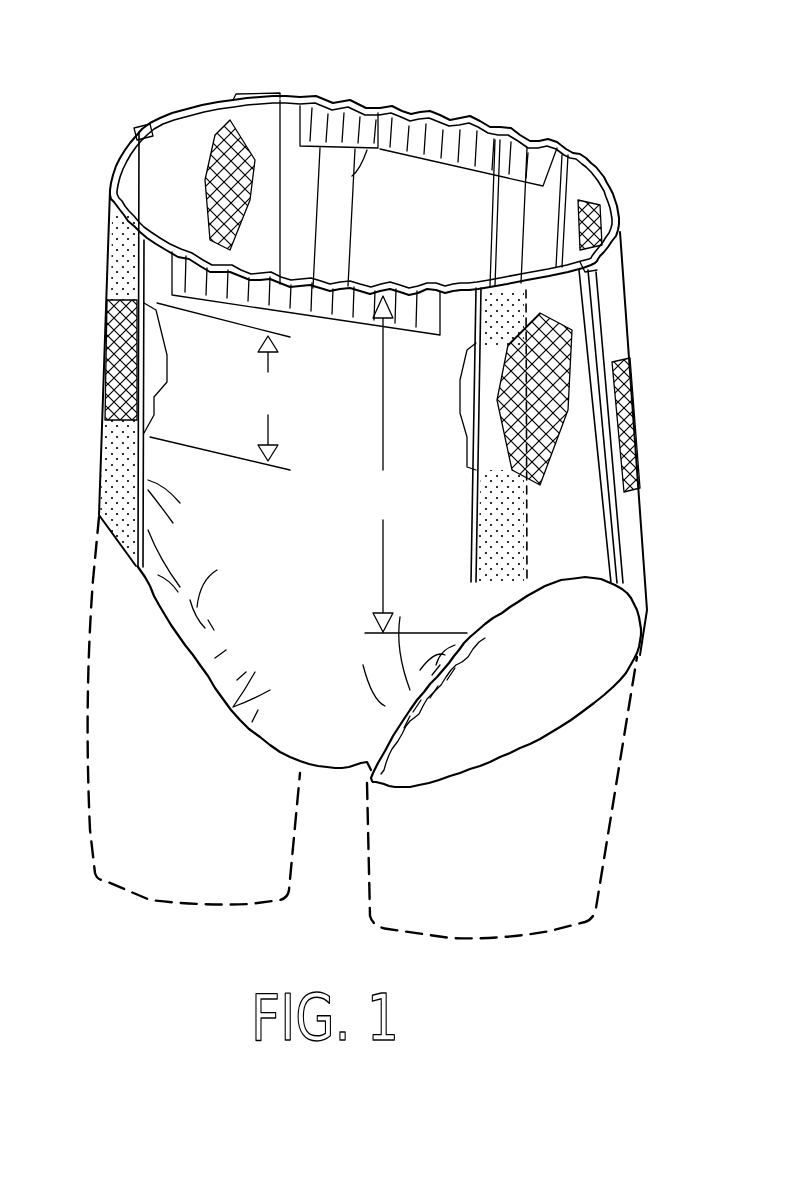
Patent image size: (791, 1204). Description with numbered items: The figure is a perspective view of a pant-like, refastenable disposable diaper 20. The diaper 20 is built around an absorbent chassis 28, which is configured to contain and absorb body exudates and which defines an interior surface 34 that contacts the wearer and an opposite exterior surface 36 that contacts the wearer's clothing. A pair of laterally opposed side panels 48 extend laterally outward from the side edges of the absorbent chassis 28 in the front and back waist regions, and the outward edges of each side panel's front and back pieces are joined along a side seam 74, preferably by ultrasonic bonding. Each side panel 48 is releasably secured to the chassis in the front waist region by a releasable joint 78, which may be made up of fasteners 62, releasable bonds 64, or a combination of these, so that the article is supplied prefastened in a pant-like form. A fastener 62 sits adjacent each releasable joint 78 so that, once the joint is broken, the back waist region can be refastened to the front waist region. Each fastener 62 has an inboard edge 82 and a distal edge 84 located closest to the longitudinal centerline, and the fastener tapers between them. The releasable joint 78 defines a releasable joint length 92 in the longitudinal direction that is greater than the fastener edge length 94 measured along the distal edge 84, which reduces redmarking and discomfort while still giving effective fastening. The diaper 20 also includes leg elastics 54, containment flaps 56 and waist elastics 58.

The diaper 20 is at (100, 56).
The absorbent chassis 28 is at (173, 467).
The interior surface 34 is at (433, 188).
The exterior surface 36 is at (540, 140).
The side panels 48 is at (115, 157).
The leg elastics 54 is at (417, 707).
The containment flaps 56 is at (375, 113).
The waist elastics 58 is at (352, 112).
The fasteners 62 is at (168, 375).
The releasable bonds 64 is at (525, 505).
The side seam 74 is at (143, 128).
The releasable joints 78 is at (500, 595).
The inboard edge 82 is at (111, 363).
The distal edge 84 is at (455, 413).
The releasable joint length 92 is at (415, 464).
The fastener edge length 94 is at (270, 398).